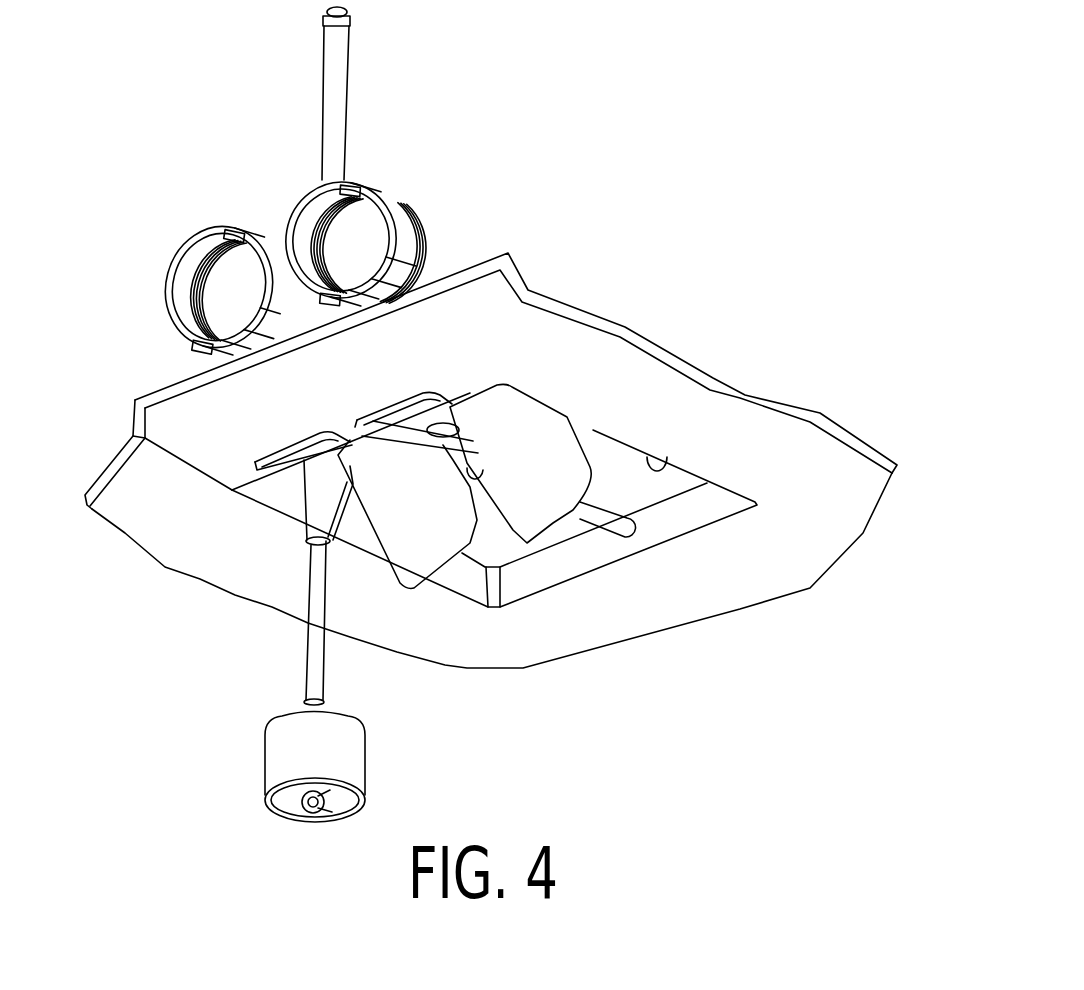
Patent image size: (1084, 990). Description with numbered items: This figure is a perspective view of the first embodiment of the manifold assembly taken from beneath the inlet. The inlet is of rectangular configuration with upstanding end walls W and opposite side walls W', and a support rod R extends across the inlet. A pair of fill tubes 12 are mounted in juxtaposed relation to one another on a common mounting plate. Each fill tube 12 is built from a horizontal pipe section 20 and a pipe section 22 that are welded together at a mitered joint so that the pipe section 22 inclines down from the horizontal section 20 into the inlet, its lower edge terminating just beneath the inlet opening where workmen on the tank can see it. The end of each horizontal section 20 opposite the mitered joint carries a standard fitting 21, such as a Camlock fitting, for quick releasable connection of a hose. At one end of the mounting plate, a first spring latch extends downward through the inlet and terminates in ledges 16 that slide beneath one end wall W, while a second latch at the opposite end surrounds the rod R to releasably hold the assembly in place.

The fill tube 12 is at (450, 255).
The ledges 16 is at (280, 457).
The horizontal pipe section 20 is at (475, 266).
The standard fitting 21 is at (193, 238).
The pipe section 22 is at (415, 557).
The support rod R is at (602, 520).
The end wall W is at (472, 544).
The side wall W' is at (469, 466).